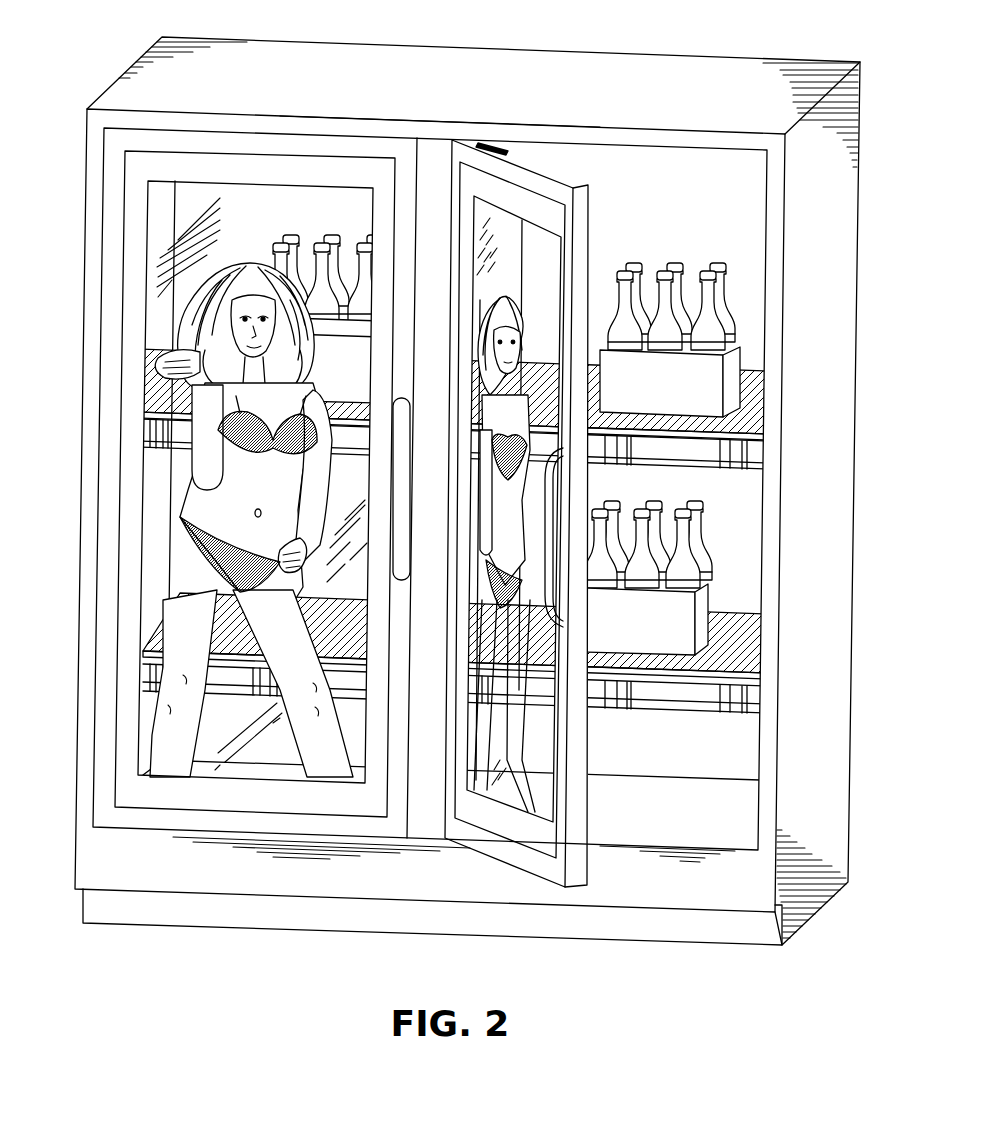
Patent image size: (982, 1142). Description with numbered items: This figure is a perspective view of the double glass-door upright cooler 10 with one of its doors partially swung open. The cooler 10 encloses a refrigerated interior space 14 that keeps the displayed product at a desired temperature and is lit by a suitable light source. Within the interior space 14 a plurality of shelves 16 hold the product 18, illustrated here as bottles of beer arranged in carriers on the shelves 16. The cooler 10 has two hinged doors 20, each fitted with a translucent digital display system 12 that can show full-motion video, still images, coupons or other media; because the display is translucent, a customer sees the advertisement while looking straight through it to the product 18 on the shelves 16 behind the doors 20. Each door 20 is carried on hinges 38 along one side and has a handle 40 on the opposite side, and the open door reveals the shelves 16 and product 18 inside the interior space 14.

The upright cooler 10 is at (199, 923).
The translucent digital display system 12 is at (143, 553).
The interior space 14 is at (661, 210).
The shelves 16 is at (737, 720).
The product 18 is at (708, 614).
The hinged door 20 is at (548, 176).
The hinges 38 is at (485, 140).
The handle 40 is at (563, 612).